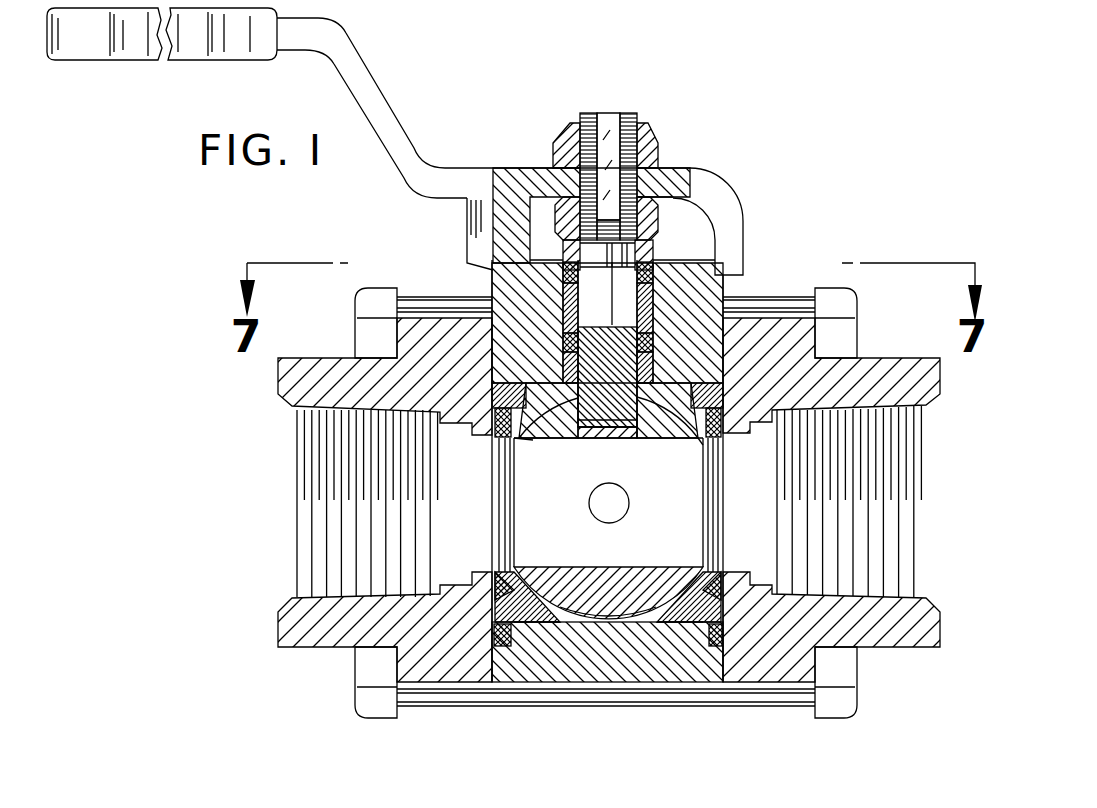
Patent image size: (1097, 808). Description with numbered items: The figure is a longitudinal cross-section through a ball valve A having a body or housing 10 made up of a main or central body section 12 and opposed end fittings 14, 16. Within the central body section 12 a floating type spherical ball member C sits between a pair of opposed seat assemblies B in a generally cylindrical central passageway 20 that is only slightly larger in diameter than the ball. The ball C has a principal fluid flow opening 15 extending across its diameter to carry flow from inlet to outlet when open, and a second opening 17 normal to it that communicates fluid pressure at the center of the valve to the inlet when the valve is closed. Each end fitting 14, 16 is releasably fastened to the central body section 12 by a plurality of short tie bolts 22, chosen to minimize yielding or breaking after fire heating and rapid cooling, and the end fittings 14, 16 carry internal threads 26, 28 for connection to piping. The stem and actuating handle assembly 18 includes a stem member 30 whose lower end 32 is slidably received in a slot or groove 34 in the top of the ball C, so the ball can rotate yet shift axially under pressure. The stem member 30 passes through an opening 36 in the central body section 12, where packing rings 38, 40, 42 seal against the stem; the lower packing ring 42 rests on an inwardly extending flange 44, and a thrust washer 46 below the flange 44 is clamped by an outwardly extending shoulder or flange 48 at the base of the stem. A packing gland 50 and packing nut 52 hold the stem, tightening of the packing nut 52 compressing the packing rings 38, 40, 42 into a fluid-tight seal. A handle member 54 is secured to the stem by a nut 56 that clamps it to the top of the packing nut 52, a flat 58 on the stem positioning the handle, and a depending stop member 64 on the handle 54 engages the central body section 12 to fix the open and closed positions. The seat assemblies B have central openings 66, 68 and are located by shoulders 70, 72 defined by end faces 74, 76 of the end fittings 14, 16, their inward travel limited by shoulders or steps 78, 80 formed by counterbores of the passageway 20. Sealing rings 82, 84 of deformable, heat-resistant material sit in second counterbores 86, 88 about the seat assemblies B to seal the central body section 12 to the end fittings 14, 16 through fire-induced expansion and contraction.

The body or housing 10 is at (601, 461).
The main or central body section 12 is at (740, 264).
The end fitting 14 is at (422, 340).
The principal fluid flow opening 15 is at (590, 553).
The end fitting 16 is at (743, 335).
The second opening 17 is at (629, 505).
The stem and actuating handle assembly 18 is at (600, 169).
The central passageway 20 is at (570, 613).
The tie bolts 22 is at (843, 702).
The internal threads 26 is at (330, 593).
The internal threads 28 is at (897, 598).
The stem member 30 is at (597, 354).
The lower end 32 is at (627, 418).
The slot or groove 34 is at (599, 438).
The opening 36 is at (650, 273).
The packing ring 38 is at (567, 274).
The packing ring 40 is at (567, 303).
The lower packing ring 42 is at (567, 328).
The inwardly extending flange 44 is at (652, 305).
The thrust washer 46 is at (652, 350).
The shoulder or flange 48 is at (653, 367).
The packing gland 50 is at (643, 252).
The packing nut 52 is at (645, 220).
The handle member 54 is at (367, 83).
The nut 56 is at (650, 145).
The flat 58 is at (604, 125).
The stop member 64 is at (730, 222).
The central opening 66 is at (508, 573).
The central opening 68 is at (713, 573).
The shoulder 70 is at (482, 409).
The shoulder 72 is at (743, 400).
The end face 74 is at (533, 440).
The end face 76 is at (700, 438).
The shoulder or step 78 is at (548, 395).
The shoulder or step 80 is at (640, 392).
The sealing ring 82 is at (530, 627).
The sealing ring 84 is at (710, 627).
The second counterbore 86 is at (495, 640).
The second counterbore 88 is at (728, 640).
The ball valve A is at (743, 161).
The seat assemblies B is at (478, 601).
The ball member C is at (641, 636).